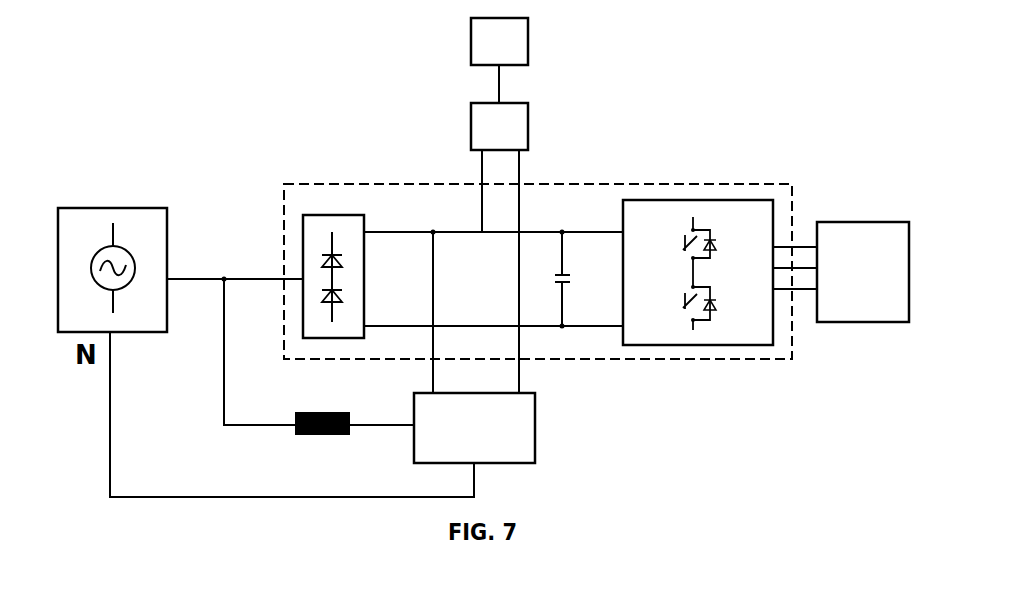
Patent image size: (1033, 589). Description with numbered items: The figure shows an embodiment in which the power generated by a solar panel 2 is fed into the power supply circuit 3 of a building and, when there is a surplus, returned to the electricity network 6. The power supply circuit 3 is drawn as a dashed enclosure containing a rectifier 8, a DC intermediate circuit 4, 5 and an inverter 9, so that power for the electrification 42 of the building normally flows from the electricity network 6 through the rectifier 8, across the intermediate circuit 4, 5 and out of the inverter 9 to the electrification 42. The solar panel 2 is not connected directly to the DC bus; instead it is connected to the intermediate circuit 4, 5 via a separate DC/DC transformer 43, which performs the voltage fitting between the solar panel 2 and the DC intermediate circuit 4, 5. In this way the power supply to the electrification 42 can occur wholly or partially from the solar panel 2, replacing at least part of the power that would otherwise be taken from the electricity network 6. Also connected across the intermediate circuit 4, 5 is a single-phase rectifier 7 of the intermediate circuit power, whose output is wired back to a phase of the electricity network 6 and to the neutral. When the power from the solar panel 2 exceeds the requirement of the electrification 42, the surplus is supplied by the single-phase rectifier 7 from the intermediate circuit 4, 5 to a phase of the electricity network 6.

The solar panel 2 is at (528, 40).
The inverter 3 is at (350, 184).
The intermediate circuit 4 is at (577, 232).
The intermediate circuit 5 is at (577, 326).
The electricity network 6 is at (102, 208).
The single-phase rectifier of the intermediate circuit power 7 is at (535, 423).
The rectifier 8 is at (322, 215).
The inverter 9 is at (690, 200).
The electrification of the building 42 is at (845, 221).
The DC/DC transformer 43 is at (528, 122).